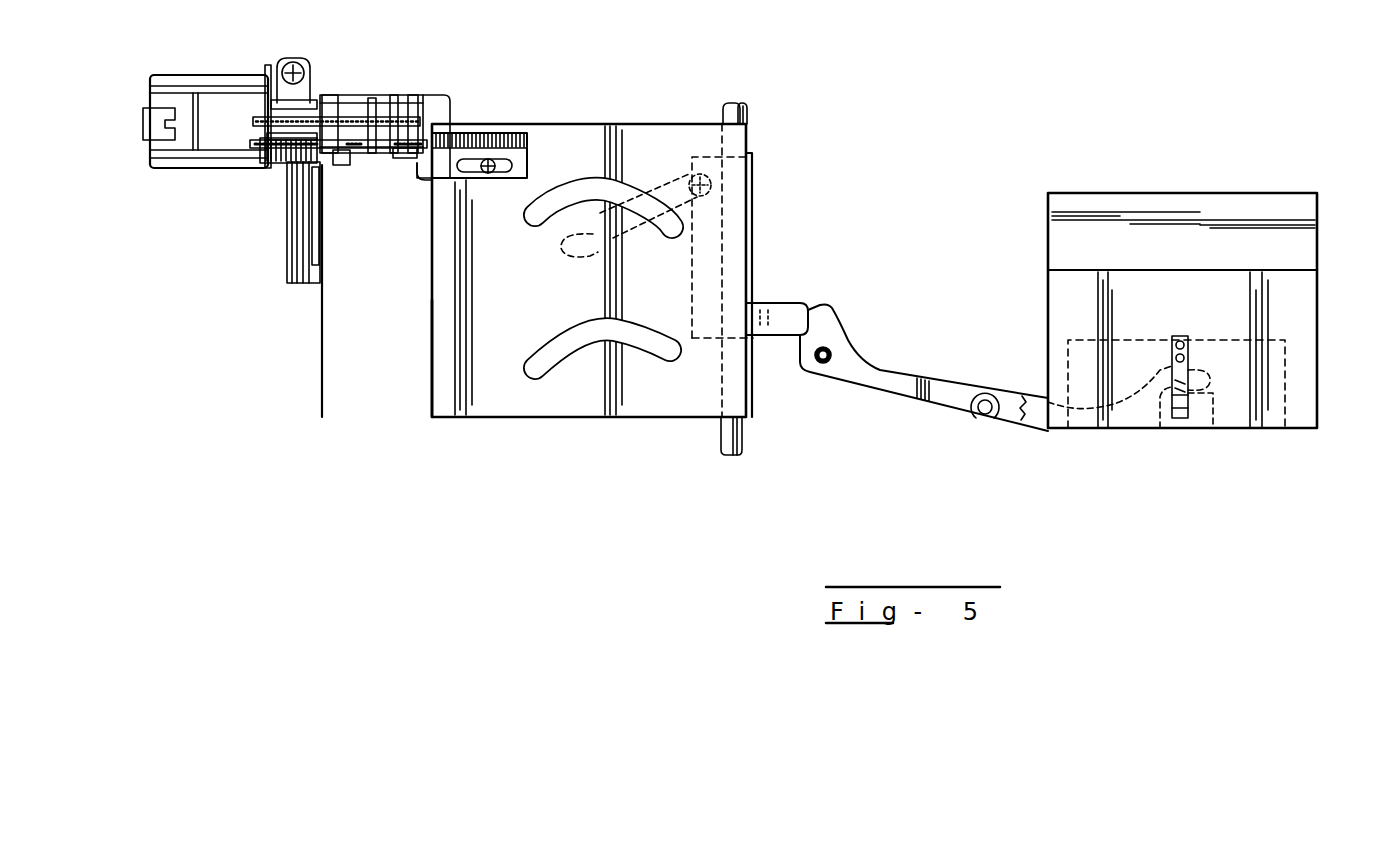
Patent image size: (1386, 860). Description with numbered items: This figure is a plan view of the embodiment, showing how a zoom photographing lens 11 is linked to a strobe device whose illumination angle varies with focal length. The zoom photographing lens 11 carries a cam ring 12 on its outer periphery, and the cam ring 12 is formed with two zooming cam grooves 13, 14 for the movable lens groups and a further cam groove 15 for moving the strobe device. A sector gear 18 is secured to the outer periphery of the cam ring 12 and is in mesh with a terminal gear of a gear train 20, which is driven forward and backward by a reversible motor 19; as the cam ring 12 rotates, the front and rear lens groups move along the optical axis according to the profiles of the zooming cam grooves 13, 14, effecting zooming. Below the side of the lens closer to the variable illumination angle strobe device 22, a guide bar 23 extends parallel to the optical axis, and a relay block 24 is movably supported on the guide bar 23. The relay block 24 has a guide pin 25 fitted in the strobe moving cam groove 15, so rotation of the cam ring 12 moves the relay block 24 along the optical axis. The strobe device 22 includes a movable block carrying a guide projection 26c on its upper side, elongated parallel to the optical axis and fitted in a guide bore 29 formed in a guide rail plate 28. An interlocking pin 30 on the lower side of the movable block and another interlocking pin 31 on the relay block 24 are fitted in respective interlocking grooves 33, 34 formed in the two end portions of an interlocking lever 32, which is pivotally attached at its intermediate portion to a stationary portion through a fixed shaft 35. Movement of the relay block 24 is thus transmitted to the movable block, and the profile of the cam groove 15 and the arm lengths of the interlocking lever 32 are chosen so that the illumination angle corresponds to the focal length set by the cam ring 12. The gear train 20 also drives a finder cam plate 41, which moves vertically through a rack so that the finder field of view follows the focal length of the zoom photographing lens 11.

The zoom photographing lens 11 is at (596, 422).
The cam ring 12 is at (483, 405).
The zooming cam groove 13 is at (567, 342).
The zooming cam groove 14 is at (557, 224).
The strobe moving cam groove 15 is at (613, 248).
The sector gear 18 is at (489, 132).
The reversible motor 19 is at (197, 145).
The gear train 20 is at (453, 86).
The variable illumination angle strobe device 22 is at (1298, 433).
The guide bar 23 is at (717, 446).
The relay block 24 is at (713, 273).
The guide pin 25 is at (712, 185).
The guide projection 26c is at (1188, 364).
The guide rail plate 28 is at (1323, 230).
The guide bore 29 is at (1178, 335).
The interlocking pin 30 is at (1172, 426).
The interlocking pin 31 is at (793, 318).
The interlocking lever 32 is at (903, 392).
The interlocking groove 33 is at (1213, 428).
The interlocking groove 34 is at (816, 323).
The fixed shaft 35 is at (985, 415).
The finder cam plate 41 is at (323, 345).